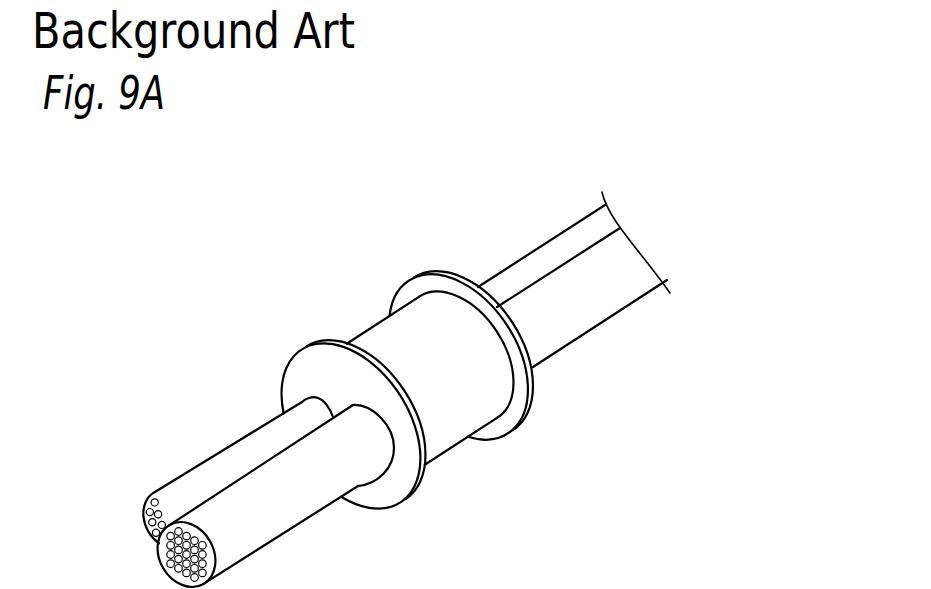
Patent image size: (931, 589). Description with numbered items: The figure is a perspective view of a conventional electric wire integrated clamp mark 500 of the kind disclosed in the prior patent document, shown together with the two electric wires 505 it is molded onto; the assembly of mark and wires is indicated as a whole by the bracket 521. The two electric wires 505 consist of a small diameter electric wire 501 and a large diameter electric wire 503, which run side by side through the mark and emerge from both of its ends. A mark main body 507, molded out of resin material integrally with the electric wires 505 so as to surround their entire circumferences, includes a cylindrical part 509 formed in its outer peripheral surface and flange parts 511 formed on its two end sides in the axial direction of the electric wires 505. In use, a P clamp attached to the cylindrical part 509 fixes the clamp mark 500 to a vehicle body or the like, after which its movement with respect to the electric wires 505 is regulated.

The cable assembly 521 is at (540, 132).
The electric wire integrated clamp mark 500 is at (442, 262).
The electric wires 505 is at (563, 172).
The small diameter electric wire 501 is at (523, 275).
The large diameter electric wire 503 is at (572, 277).
The mark main body 507 is at (364, 321).
The cylindrical part 509 is at (468, 402).
The flange parts 511 is at (528, 406).